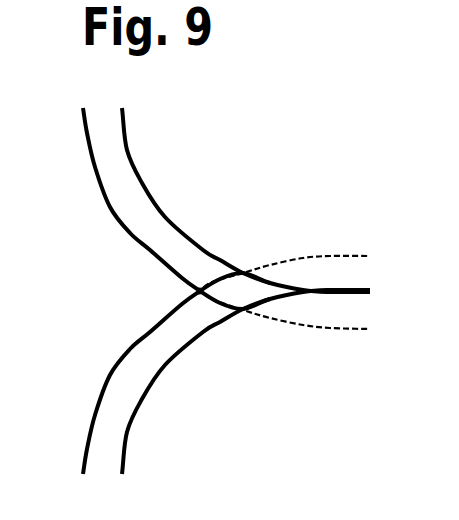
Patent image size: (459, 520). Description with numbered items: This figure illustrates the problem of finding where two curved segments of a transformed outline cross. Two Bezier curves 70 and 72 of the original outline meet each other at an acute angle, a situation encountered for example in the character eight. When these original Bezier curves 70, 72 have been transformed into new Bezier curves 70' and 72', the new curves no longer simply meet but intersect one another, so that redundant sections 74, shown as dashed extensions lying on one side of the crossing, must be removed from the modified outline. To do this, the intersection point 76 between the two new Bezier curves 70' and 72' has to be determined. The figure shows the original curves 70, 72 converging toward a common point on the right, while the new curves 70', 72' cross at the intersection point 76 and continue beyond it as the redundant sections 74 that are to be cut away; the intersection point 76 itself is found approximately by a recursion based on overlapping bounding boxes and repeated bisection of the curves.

The Bezier curve 70 is at (246, 200).
The new Bezier curve 70' is at (152, 208).
The Bezier curve 72 is at (246, 382).
The new Bezier curve 72' is at (141, 373).
The redundant sections 74 is at (333, 257).
The intersection point 76 is at (200, 292).